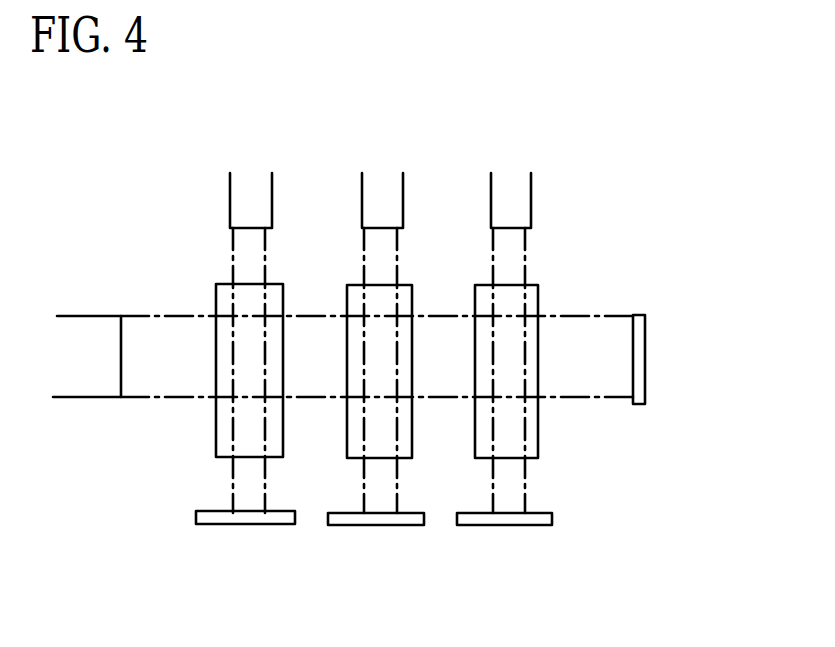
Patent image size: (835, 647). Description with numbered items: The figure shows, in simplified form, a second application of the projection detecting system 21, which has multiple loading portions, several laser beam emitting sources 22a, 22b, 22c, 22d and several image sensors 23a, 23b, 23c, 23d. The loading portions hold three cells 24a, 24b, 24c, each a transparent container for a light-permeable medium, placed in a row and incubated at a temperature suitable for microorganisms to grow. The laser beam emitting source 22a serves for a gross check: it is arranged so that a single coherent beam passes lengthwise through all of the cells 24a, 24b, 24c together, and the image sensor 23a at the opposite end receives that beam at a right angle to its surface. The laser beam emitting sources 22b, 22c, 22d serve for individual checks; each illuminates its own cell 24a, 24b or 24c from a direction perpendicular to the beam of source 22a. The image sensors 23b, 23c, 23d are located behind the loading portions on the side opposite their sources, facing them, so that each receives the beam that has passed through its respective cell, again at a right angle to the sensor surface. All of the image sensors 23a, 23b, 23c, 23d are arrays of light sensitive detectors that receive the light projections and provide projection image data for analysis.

The projection detecting system 21 is at (575, 236).
The laser beam emitting source for gross check 22a is at (98, 390).
The laser beam emitting source for individual check 22b is at (272, 188).
The laser beam emitting source for individual check 22c is at (403, 188).
The laser beam emitting source for individual check 22d is at (531, 190).
The image sensor 23a is at (645, 352).
The image sensor 23b is at (257, 524).
The image sensor 23c is at (416, 526).
The image sensor 23d is at (543, 527).
The cell 24a is at (216, 439).
The cell 24b is at (348, 441).
The cell 24c is at (538, 424).